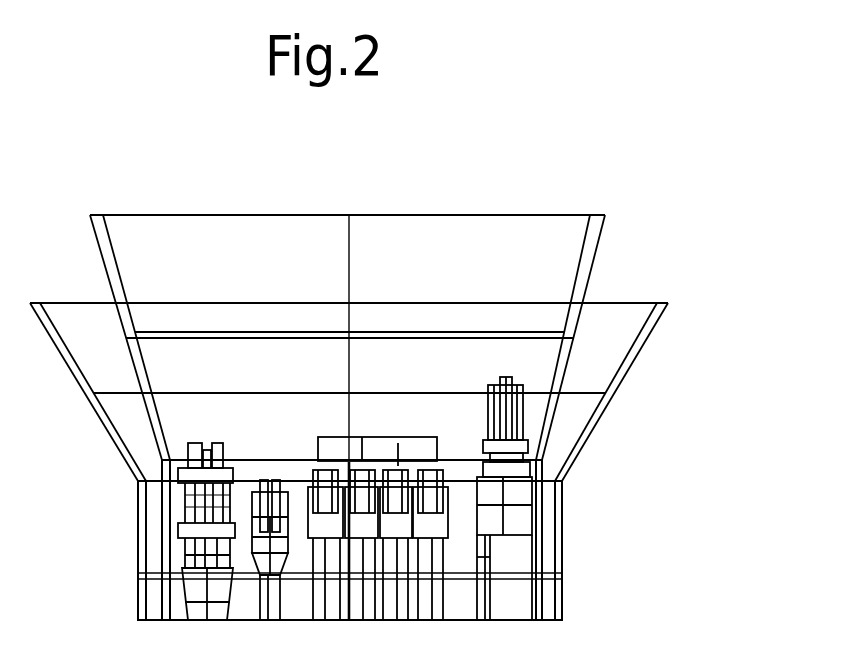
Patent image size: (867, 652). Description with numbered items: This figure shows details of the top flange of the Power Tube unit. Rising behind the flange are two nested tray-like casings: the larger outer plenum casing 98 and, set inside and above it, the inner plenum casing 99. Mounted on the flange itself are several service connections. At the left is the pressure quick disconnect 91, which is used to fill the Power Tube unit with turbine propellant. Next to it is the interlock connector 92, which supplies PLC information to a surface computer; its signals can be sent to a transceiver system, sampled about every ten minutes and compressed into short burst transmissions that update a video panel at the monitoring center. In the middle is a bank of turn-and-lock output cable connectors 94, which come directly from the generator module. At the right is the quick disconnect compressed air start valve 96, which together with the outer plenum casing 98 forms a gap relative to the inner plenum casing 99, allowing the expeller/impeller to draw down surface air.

The pressure quick disconnect 91 is at (200, 430).
The interlock connector 92 is at (268, 462).
The output cable connectors 94 is at (379, 437).
The quick disconnect compressed air start valve 96 is at (507, 365).
The outer plenum casing 98 is at (648, 345).
The inner plenum casing 99 is at (612, 228).